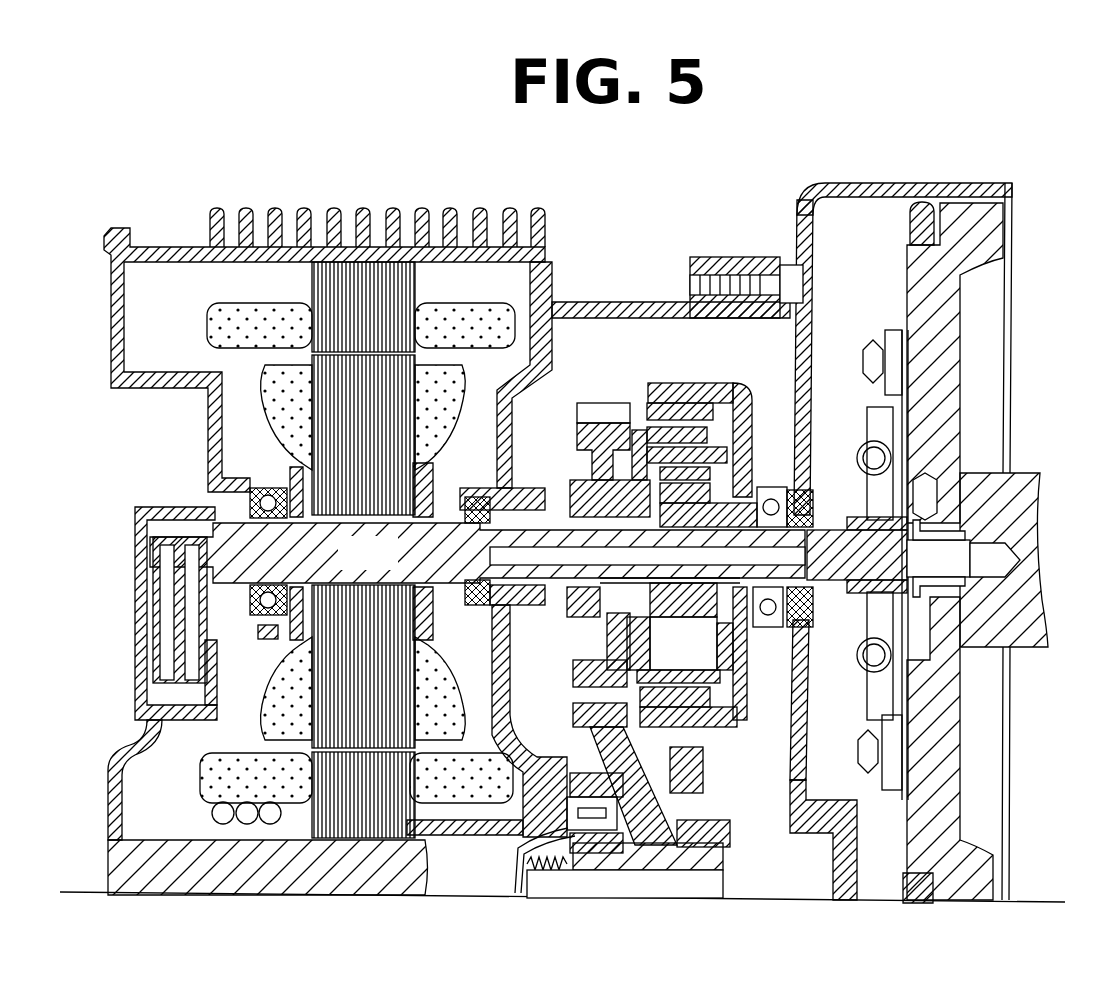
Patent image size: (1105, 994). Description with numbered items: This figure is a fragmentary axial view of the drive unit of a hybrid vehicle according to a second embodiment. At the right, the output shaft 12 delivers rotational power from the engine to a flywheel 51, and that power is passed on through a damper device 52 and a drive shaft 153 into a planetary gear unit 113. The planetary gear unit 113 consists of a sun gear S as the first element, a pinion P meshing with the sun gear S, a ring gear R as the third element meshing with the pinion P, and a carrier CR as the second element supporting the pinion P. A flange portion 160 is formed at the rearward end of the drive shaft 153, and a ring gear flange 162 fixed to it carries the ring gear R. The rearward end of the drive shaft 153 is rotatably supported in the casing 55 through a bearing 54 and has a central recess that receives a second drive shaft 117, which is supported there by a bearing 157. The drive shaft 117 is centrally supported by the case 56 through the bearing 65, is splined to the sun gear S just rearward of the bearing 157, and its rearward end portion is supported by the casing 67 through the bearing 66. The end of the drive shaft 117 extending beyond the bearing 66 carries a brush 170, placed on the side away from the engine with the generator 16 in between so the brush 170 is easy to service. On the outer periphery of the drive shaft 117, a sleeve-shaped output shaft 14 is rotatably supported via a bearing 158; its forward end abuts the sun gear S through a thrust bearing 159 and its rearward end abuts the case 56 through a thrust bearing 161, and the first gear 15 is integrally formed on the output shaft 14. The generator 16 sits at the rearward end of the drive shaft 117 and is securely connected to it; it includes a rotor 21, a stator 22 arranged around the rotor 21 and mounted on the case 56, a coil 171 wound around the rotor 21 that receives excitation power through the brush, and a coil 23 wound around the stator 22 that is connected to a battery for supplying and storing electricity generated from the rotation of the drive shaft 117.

The output shaft 12 is at (985, 483).
The output shaft 14 is at (565, 490).
The first gear 15 is at (597, 412).
The generator 16 is at (378, 242).
The rotor 21 is at (313, 380).
The stator 22 is at (345, 275).
The coil 23 is at (210, 332).
The flywheel 51 is at (943, 353).
The damper device 52 is at (850, 405).
The bearing 54 is at (765, 490).
The casing 55 is at (950, 185).
The case 56 is at (190, 255).
The bearing 65 is at (480, 605).
The bearing 66 is at (265, 637).
The casing 67 is at (268, 672).
The planetary gear unit 113 is at (688, 336).
The drive shaft 117 is at (395, 567).
The drive shaft 153 is at (835, 540).
The bearing 157 is at (810, 592).
The bearing 158 is at (552, 595).
The thrust bearing 159 is at (665, 605).
The flange portion 160 is at (738, 615).
The thrust bearing 161 is at (532, 612).
The ring gear flange 162 is at (746, 728).
The brush 170 is at (170, 575).
The coil 171 is at (262, 395).
The carrier CR is at (632, 403).
The ring gear R is at (668, 390).
The pinion P is at (715, 392).
The sun gear S is at (735, 672).